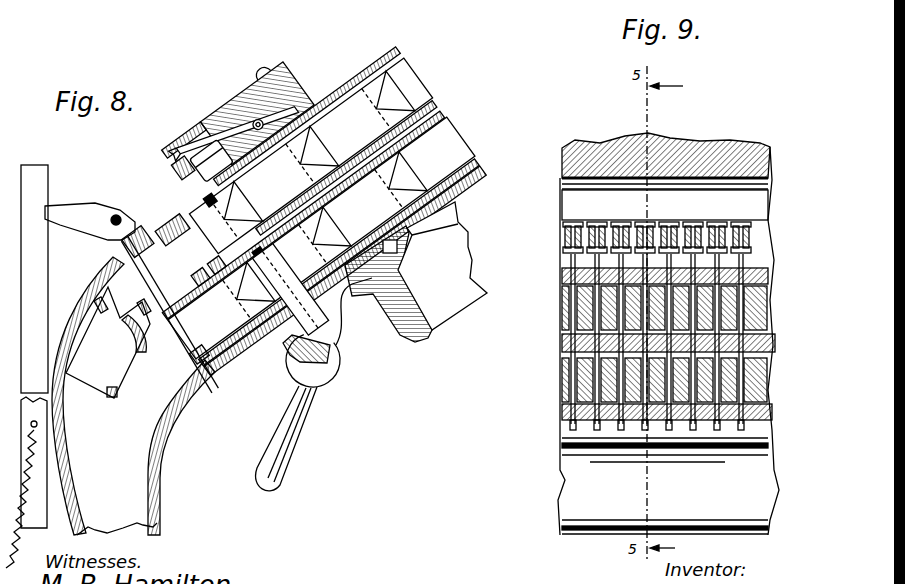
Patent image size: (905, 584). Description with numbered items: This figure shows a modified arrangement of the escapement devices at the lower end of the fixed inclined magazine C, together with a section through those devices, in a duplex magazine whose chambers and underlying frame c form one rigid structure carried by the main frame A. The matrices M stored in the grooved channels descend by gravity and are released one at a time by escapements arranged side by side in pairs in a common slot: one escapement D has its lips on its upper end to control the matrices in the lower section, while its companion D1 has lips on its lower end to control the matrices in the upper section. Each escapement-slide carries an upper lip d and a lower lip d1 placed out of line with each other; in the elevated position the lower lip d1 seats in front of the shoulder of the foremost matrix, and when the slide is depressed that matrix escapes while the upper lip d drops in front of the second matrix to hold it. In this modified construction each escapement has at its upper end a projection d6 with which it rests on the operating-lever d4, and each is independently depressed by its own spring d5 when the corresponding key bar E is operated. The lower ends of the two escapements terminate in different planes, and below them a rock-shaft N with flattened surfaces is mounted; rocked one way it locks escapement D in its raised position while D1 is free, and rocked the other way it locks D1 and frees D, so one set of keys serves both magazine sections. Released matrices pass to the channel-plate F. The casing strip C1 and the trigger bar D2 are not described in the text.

In FIG. 8, the key bar E is at (27, 366).
In FIG. 8, the channel-plate F is at (164, 369).
In FIG. 8, the matrices M is at (270, 226).
In FIG. 9, the matrices M is at (587, 390).
In FIG. 8, the magazine C is at (432, 104).
In FIG. 9, the magazine C is at (768, 296).
In FIG. 8, the lower casing strip C1 is at (470, 170).
In FIG. 9, the lower casing strip C1 is at (768, 410).
In FIG. 8, the underlying frame c is at (416, 272).
In FIG. 9, the underlying frame c is at (665, 486).
In FIG. 8, the upper lip d is at (233, 210).
In FIG. 8, the lower lip d1 is at (195, 272).
In FIG. 9, the lower lip d1 is at (567, 420).
In FIG. 8, the operating-lever d4 is at (90, 210).
In FIG. 9, the operating-lever d4 is at (618, 232).
In FIG. 8, the spring d5 is at (222, 133).
In FIG. 8, the projection d6 is at (178, 170).
In FIG. 8, the escapement D is at (308, 322).
In FIG. 9, the escapement D is at (722, 265).
In FIG. 9, the companion escapement D1 is at (743, 285).
In FIG. 8, the trigger bar D2 is at (303, 352).
In FIG. 8, the rock-shaft N is at (332, 353).
In FIG. 9, the main frame A is at (666, 149).